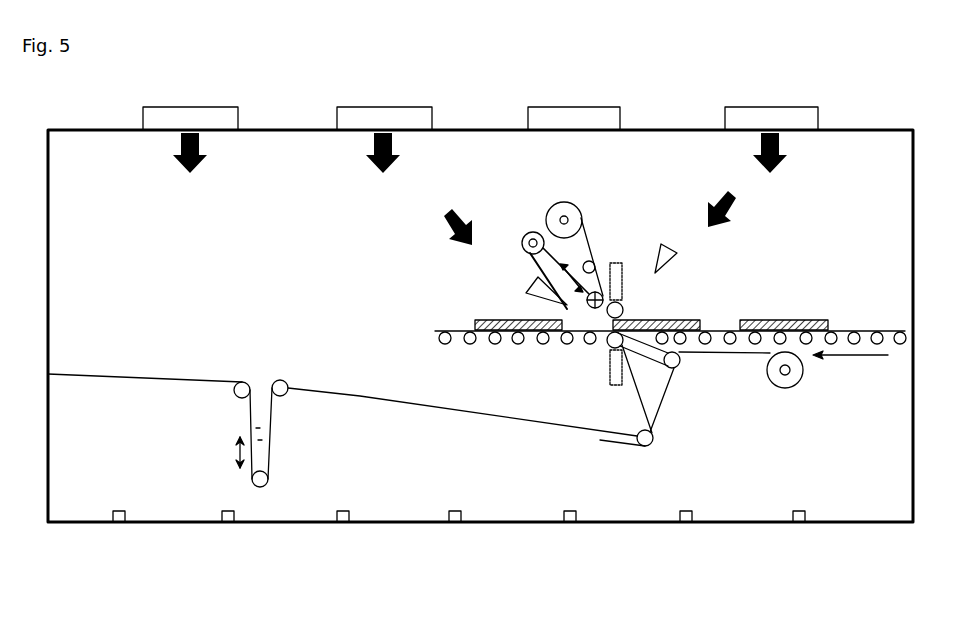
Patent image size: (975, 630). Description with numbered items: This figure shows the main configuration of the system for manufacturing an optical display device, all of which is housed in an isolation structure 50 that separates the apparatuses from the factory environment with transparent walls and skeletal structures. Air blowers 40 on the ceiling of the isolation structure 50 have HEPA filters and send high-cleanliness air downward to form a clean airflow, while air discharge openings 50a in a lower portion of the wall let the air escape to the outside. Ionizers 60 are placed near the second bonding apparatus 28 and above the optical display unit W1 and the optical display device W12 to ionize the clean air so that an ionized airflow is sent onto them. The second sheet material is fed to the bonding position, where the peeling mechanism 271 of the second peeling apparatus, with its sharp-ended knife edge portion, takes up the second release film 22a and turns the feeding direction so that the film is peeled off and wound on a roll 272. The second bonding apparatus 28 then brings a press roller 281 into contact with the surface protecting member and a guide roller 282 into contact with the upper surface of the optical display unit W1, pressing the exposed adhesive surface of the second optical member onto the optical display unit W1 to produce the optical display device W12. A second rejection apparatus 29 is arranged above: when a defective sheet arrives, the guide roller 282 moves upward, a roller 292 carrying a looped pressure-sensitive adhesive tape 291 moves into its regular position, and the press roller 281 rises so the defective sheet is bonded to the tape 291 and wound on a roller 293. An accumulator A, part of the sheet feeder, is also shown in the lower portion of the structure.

The air blower 40 is at (768, 106).
The isolation structure 50 is at (773, 523).
The air discharge opening 50a is at (685, 527).
The second rejection apparatus 29 is at (500, 185).
The pressure-sensitive adhesive tape 291 is at (553, 206).
The roller 292 is at (597, 263).
The roller 293 is at (531, 231).
The second bonding apparatus 28 is at (637, 274).
The guide roller 282 is at (625, 305).
The press roller 281 is at (634, 343).
The peeling mechanism 271 is at (680, 350).
The roll 272 is at (798, 388).
The second release film 22a is at (740, 341).
The ionizer 60 is at (532, 283).
The optical display device W12 is at (487, 311).
The optical display unit W1 is at (780, 318).
The accumulator A is at (284, 453).